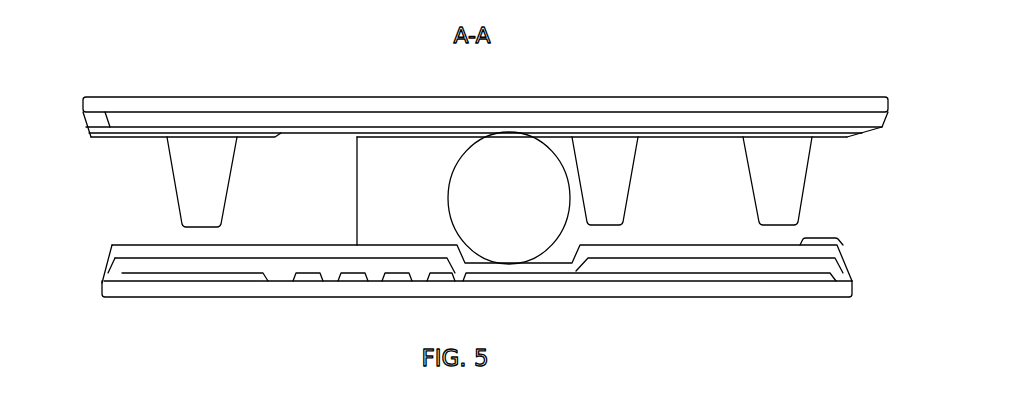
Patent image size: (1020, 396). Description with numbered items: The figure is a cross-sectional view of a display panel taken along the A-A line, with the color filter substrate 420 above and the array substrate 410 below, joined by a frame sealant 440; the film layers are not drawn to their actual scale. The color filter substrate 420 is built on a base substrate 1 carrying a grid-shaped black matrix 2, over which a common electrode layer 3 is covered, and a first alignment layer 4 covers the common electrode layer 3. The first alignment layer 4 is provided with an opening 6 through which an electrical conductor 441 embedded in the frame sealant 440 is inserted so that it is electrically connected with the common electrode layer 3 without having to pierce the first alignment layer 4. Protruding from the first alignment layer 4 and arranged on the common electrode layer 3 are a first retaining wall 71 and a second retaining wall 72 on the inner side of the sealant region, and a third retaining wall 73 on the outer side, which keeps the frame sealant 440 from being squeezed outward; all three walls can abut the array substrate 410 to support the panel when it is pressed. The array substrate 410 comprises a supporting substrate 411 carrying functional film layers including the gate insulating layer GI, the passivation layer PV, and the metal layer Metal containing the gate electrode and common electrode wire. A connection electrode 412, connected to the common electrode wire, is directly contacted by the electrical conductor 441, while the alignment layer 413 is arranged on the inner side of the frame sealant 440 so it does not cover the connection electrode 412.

The base substrate 1 is at (95, 102).
The black matrix 2 is at (140, 118).
The common electrode layer 3 is at (163, 130).
The first alignment layer 4 is at (253, 138).
The opening 6 is at (287, 137).
The color filter substrate 420 is at (457, 112).
The array substrate 410 is at (463, 264).
The supporting substrate 411 is at (138, 287).
The connection electrode 412 is at (540, 267).
The alignment layer 413 is at (827, 240).
The frame sealant 440 is at (415, 145).
The electrical conductor 441 is at (510, 148).
The first retaining wall 71 is at (790, 182).
The second retaining wall 72 is at (610, 182).
The third retaining wall 73 is at (215, 172).
The passivation layer PV is at (130, 243).
The gate insulating layer GI is at (245, 262).
The metal layer Metal is at (262, 272).